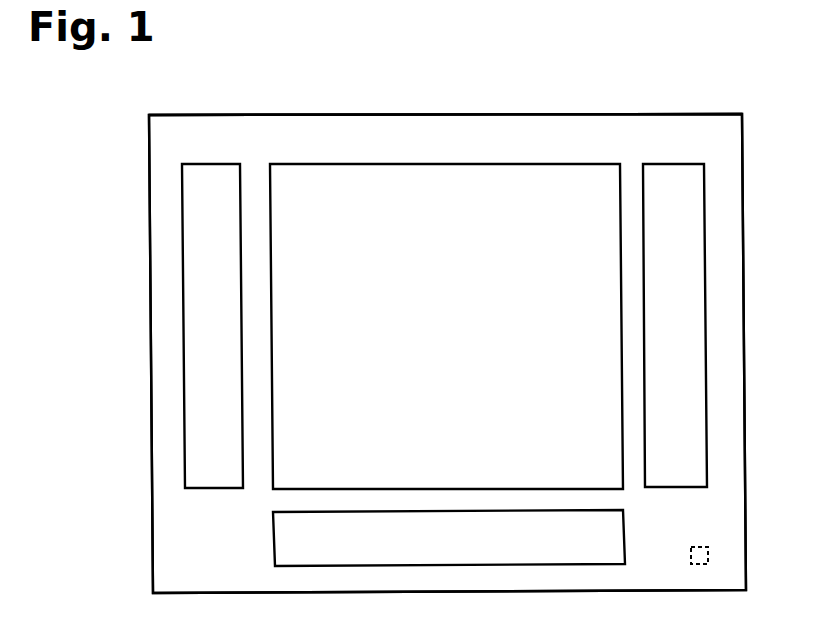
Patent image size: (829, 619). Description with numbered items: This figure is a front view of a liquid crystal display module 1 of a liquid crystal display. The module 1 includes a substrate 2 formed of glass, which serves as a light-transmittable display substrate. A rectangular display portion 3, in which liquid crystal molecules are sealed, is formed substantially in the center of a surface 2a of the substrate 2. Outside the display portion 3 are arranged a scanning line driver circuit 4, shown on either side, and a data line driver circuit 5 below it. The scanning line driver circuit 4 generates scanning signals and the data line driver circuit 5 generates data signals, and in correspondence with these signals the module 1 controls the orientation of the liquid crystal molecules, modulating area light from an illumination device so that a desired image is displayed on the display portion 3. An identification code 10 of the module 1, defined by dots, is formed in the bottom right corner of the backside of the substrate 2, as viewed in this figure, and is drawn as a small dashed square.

The liquid crystal display module 1 is at (122, 193).
The substrate 2 is at (430, 116).
The surface 2a is at (315, 118).
The display portion 3 is at (461, 343).
The scanning line driver circuit 4 is at (223, 342).
The data line driver circuit 5 is at (461, 553).
The identification code 10 is at (700, 547).